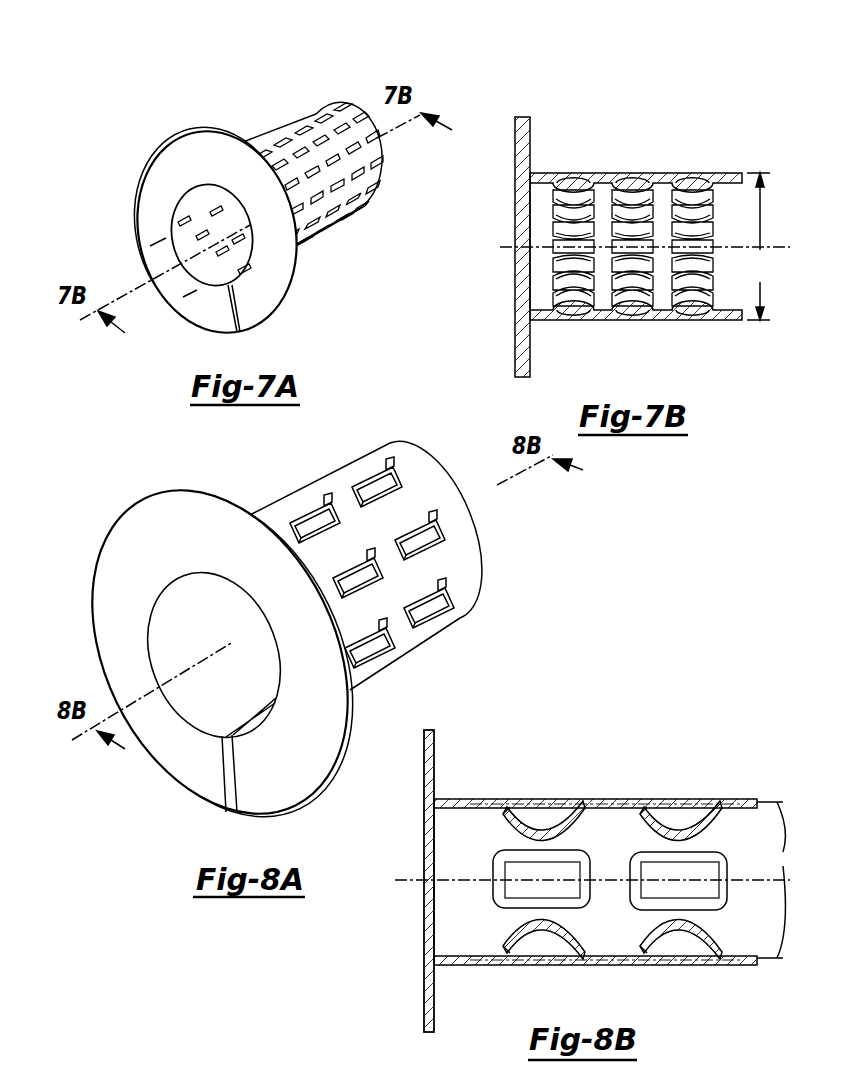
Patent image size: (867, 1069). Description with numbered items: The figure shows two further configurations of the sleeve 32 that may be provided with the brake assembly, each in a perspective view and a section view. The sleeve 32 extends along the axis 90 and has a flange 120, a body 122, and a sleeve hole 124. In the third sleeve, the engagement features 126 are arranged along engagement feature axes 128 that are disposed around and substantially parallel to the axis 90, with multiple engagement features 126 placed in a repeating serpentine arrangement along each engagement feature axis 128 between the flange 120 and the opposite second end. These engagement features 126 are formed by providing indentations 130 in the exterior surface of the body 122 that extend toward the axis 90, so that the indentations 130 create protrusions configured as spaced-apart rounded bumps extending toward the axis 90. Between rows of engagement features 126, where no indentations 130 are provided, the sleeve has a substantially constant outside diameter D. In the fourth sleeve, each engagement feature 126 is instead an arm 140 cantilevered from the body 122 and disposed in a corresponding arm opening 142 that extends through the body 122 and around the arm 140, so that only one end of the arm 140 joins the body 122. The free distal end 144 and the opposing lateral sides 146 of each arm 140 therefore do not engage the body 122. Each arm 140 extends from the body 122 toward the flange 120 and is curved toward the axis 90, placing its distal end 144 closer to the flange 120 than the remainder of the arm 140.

In FIG. 7A, the sleeve 32 is at (313, 143).
In FIG. 7B, the sleeve 32 is at (661, 215).
In FIG. 8A, the sleeve 32 is at (193, 475).
In FIG. 8B, the sleeve 32 is at (595, 857).
In FIG. 7A, the flange 120 is at (198, 132).
In FIG. 7B, the flange 120 is at (522, 117).
In FIG. 8A, the flange 120 is at (168, 494).
In FIG. 8B, the flange 120 is at (425, 1032).
In FIG. 7B, the body 122 is at (683, 174).
In FIG. 7B, the sleeve hole 124 is at (528, 310).
In FIG. 8B, the sleeve hole 124 is at (426, 952).
In FIG. 7A, the engagement features 126 is at (182, 218).
In FIG. 7B, the engagement features 126 is at (700, 300).
In FIG. 8A, the engagement features 126 is at (457, 596).
In FIG. 8B, the engagement features 126 is at (543, 818).
In FIG. 7A, the engagement feature axes 128 is at (160, 246).
In FIG. 8B, the engagement feature axes 128 is at (778, 880).
In FIG. 7A, the indentations 130 is at (355, 212).
In FIG. 7B, the indentations 130 is at (633, 173).
In FIG. 8A, the arm 140 is at (312, 515).
In FIG. 8B, the arm 140 is at (672, 852).
In FIG. 8A, the arm opening 142 is at (296, 525).
In FIG. 8B, the distal end 144 is at (505, 812).
In FIG. 8A, the lateral sides 146 is at (328, 498).
In FIG. 7A, the axis 90 is at (123, 296).
In FIG. 7B, the axis 90 is at (773, 247).
In FIG. 8A, the axis 90 is at (198, 664).
In FIG. 8B, the axis 90 is at (447, 881).
In FIG. 7B, the outside diameter D is at (758, 246).